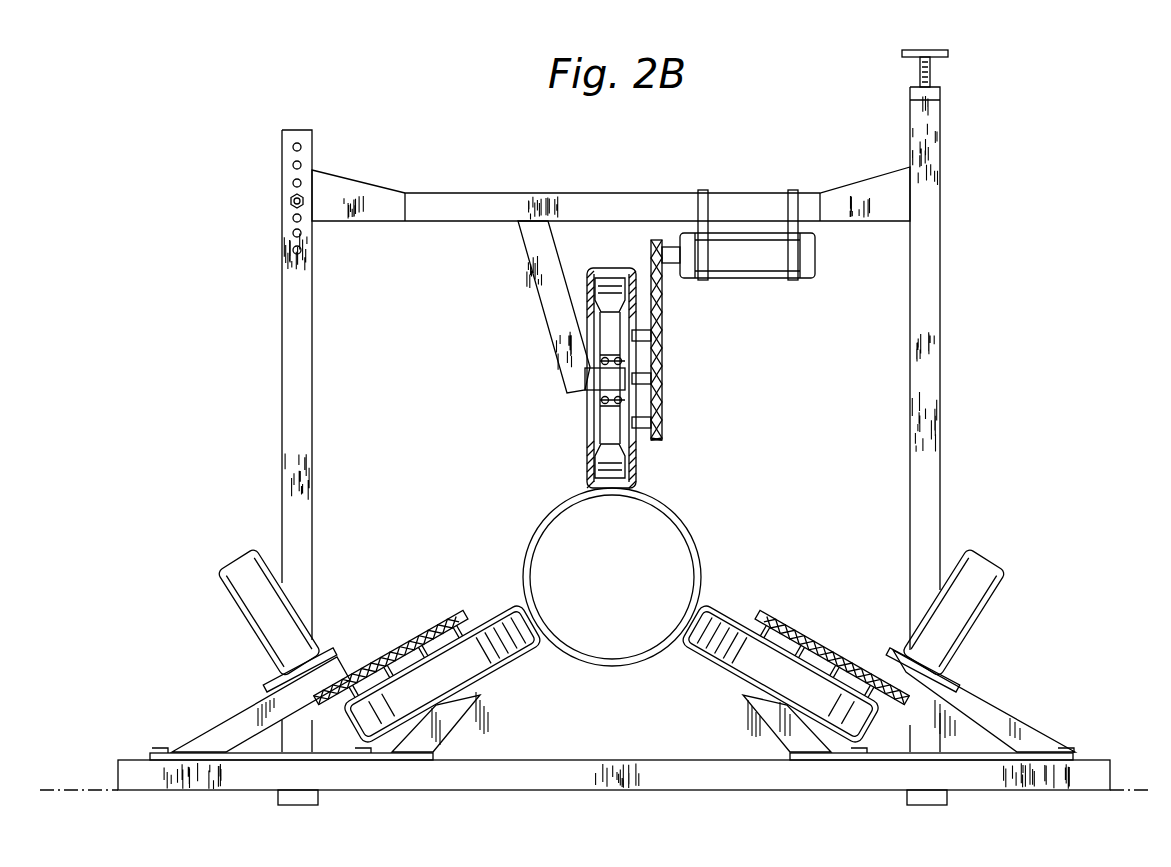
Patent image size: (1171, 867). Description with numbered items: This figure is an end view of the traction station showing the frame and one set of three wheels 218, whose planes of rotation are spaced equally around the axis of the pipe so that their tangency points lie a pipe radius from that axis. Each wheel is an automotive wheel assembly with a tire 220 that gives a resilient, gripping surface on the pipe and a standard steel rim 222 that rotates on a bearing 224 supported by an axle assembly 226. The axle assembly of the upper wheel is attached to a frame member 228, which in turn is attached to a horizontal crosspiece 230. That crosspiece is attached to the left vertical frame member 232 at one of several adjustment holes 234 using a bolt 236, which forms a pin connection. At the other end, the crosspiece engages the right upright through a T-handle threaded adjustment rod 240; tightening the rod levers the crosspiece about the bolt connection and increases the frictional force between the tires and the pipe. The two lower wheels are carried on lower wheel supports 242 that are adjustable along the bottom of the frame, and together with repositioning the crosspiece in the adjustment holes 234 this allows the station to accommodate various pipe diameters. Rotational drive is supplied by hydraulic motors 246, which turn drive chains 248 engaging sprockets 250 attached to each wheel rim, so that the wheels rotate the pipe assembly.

The wheels 218 is at (640, 447).
The tire 220 is at (634, 476).
The steel rim 222 is at (593, 432).
The bearing 224 is at (612, 400).
The axle assembly 226 is at (585, 378).
The frame member 228 is at (540, 294).
The horizontal crosspiece 230 is at (462, 193).
The left vertical frame member 232 is at (282, 290).
The adjustment holes 234 is at (289, 183).
The bolt 236 is at (291, 201).
The T-handle threaded adjustment rod 240 is at (930, 75).
The lower wheel supports 242 is at (222, 717).
The hydraulic motors 246 is at (780, 278).
The drive chains 248 is at (663, 295).
The sprockets 250 is at (660, 383).